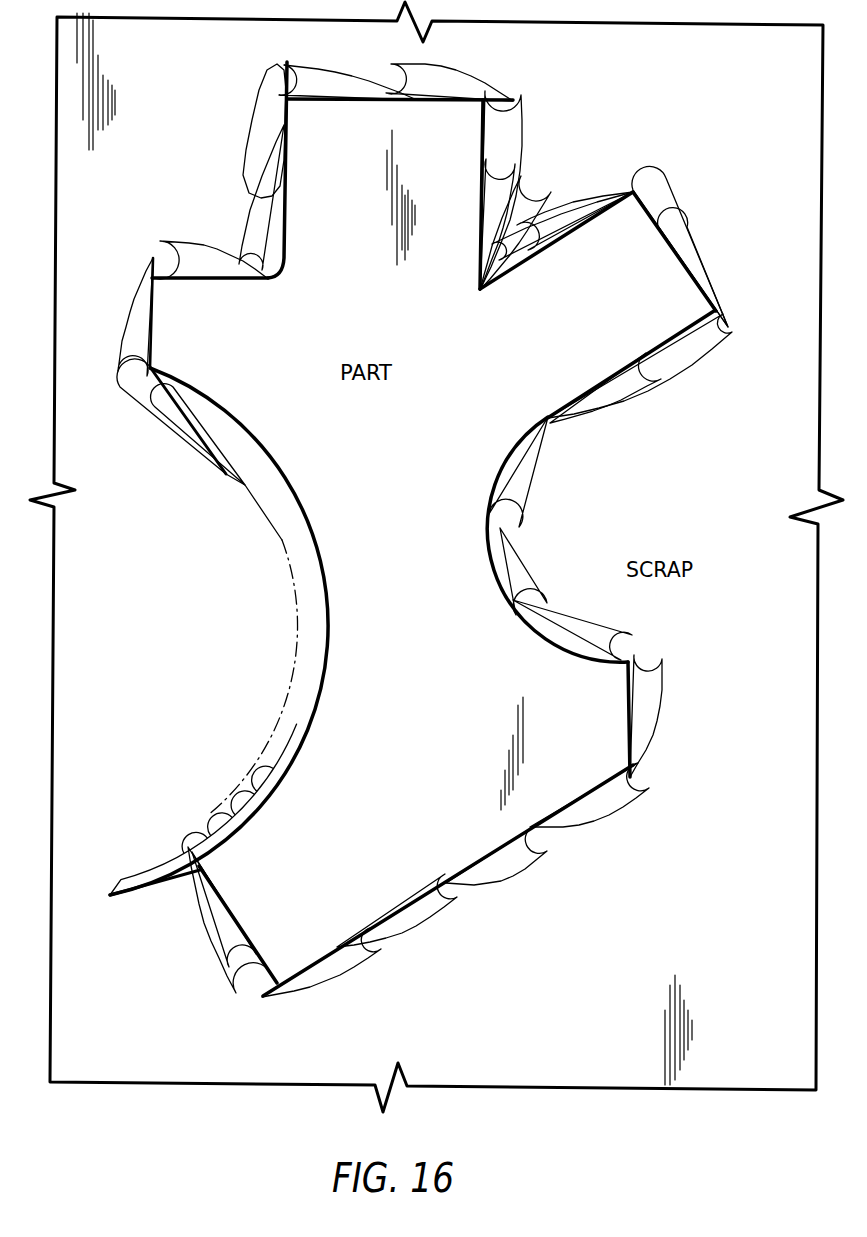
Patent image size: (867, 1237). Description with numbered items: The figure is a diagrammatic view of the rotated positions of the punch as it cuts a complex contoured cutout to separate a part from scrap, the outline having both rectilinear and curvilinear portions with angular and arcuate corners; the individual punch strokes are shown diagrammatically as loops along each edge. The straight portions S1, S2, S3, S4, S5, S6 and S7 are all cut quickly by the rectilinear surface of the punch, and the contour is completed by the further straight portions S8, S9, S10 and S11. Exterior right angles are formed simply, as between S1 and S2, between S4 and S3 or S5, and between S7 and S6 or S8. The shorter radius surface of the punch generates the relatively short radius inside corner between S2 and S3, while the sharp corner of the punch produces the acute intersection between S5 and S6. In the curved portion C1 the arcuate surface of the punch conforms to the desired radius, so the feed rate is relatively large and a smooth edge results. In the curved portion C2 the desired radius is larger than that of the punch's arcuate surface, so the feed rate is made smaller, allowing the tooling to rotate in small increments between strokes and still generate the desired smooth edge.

The rectilinear portion S1 is at (152, 318).
The rectilinear portion S2 is at (213, 280).
The rectilinear portion S3 is at (285, 215).
The rectilinear portion S4 is at (350, 102).
The rectilinear portion S5 is at (479, 232).
The rectilinear portion S6 is at (490, 291).
The rectilinear portion S7 is at (687, 273).
The rectilinear surface S8 is at (615, 375).
The ninth straight cut S9 is at (628, 717).
The tenth straight cut S10 is at (442, 878).
The eleventh straight cut S11 is at (246, 926).
The curved portion C1 is at (510, 600).
The curved portion C2 is at (330, 617).